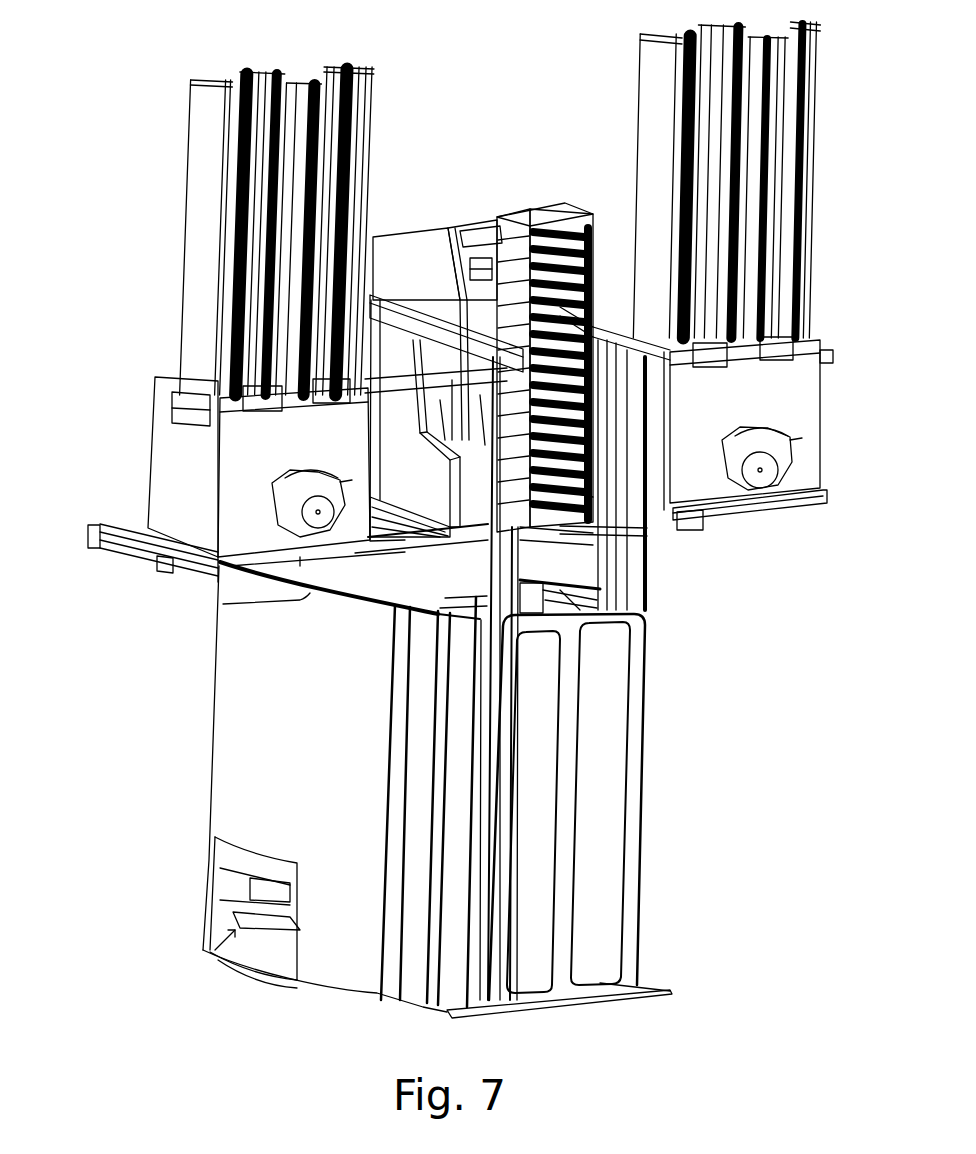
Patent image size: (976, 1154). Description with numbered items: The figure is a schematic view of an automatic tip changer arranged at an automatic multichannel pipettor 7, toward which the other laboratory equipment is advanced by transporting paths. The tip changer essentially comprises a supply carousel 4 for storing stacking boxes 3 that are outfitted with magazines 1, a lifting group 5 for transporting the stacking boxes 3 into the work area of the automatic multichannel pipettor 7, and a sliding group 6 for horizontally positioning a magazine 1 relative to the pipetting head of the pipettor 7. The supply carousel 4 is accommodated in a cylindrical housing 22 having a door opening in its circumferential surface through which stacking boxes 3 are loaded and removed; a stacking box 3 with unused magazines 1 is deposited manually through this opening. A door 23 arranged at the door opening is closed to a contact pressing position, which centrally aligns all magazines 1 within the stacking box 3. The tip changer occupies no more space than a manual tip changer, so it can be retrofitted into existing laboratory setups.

The magazine 1 is at (548, 460).
The stacking box 3 is at (605, 312).
The supply carousel 4 is at (210, 948).
The lifting group 5 is at (658, 562).
The sliding group 6 is at (360, 308).
The automatic multichannel pipettor 7 is at (428, 262).
The cylindrical housing 22 is at (240, 603).
The door 23 is at (558, 978).